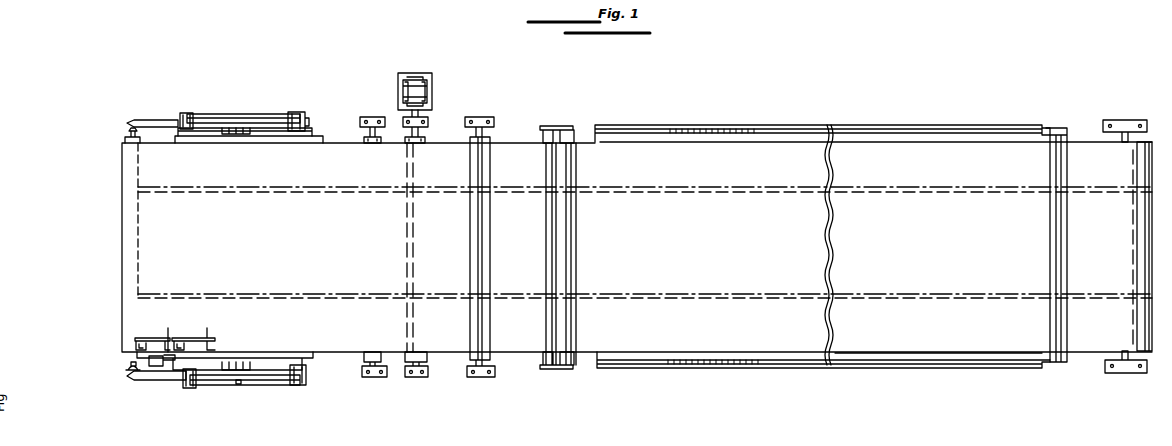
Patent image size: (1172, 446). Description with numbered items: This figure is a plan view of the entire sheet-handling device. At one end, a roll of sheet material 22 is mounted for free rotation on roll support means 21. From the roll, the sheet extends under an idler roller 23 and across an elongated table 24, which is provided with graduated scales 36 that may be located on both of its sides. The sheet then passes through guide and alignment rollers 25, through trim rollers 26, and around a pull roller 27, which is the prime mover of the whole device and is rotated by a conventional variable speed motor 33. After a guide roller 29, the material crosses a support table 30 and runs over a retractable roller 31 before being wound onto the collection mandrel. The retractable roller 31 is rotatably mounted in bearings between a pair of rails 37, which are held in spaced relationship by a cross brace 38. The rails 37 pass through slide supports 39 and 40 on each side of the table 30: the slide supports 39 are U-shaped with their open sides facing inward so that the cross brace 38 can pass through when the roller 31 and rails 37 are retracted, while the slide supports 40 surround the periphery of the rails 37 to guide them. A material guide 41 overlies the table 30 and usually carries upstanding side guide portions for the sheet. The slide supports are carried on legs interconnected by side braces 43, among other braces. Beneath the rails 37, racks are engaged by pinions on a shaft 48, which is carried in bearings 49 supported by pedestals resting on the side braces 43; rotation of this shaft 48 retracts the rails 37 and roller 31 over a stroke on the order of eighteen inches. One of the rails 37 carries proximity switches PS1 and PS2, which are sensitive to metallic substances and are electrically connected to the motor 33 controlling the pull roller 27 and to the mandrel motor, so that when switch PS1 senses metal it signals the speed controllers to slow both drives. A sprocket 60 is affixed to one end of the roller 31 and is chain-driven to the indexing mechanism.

The roll support means 21 is at (1124, 123).
The roll of sheet material 22 is at (1112, 246).
The idler roller 23 is at (1056, 362).
The elongated table 24 is at (852, 368).
The guide and alignment rollers 25 is at (572, 132).
The trim rollers 26 is at (490, 137).
The pull roller 27 is at (427, 360).
The guide roller 29 is at (368, 138).
The support table 30 is at (229, 395).
The retractable roller 31 is at (127, 140).
The variable speed motor 33 is at (420, 87).
The graduated scales 36 is at (727, 126).
The rails 37 is at (160, 122).
The cross brace 38 is at (182, 128).
The slide supports 39 is at (190, 115).
The slide supports 40 is at (296, 115).
The material guide 41 is at (315, 136).
The side braces 43 is at (256, 113).
The shaft 48 is at (238, 384).
The bearings 49 is at (245, 366).
The sprocket 60 is at (130, 367).
The proximity switch PS1 is at (178, 342).
The proximity switch PS2 is at (136, 340).